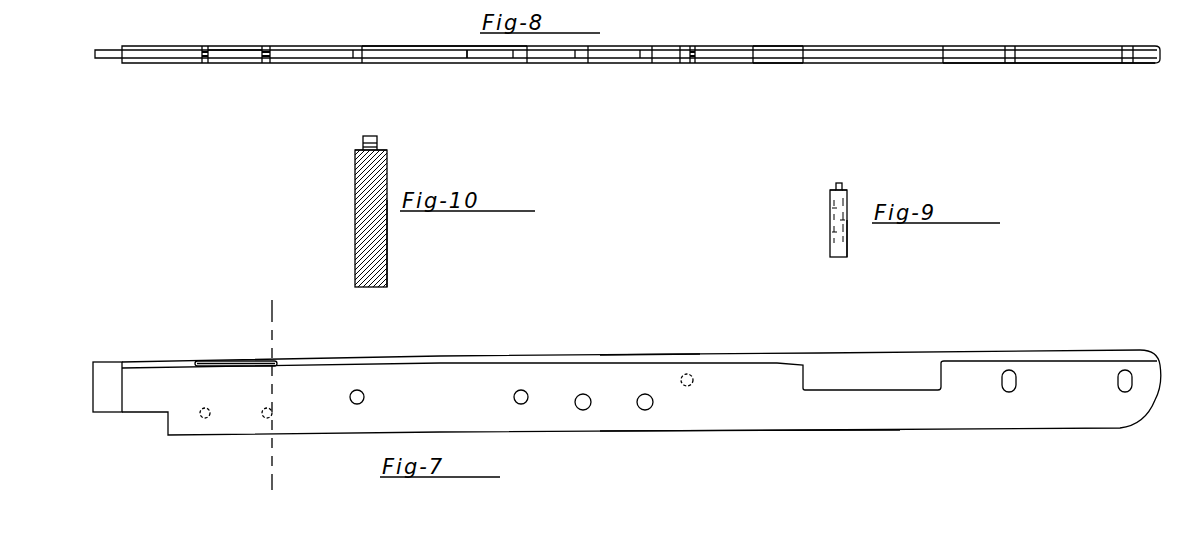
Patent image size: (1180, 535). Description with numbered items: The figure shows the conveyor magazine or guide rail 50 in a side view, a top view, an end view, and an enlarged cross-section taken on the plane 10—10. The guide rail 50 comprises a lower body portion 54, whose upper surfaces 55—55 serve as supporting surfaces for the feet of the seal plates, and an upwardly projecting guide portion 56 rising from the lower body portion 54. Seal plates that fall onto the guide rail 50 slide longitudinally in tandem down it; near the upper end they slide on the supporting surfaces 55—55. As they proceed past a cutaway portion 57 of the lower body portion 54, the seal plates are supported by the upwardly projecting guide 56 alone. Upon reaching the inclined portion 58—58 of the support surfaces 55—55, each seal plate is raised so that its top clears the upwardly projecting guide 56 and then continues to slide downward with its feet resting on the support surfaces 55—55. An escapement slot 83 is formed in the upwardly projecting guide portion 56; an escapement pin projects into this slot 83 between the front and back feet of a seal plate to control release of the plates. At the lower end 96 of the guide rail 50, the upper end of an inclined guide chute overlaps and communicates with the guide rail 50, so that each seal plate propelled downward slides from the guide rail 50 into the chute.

In FIG. 7, the section plane 10 is at (271, 308).
In FIG. 8, the guide rail 50 is at (384, 42).
In FIG. 10, the guide rail 50 is at (350, 226).
In FIG. 9, the guide rail 50 is at (828, 213).
In FIG. 7, the guide rail 50 is at (405, 353).
In FIG. 8, the lower body portion 54 is at (1068, 63).
In FIG. 10, the lower body portion 54 is at (386, 256).
In FIG. 9, the lower body portion 54 is at (847, 249).
In FIG. 7, the lower body portion 54 is at (720, 420).
In FIG. 8, the upper surfaces 55 is at (420, 46).
In FIG. 10, the upper surfaces 55 is at (358, 150).
In FIG. 9, the upper surfaces 55 is at (855, 178).
In FIG. 7, the upper surfaces 55 is at (521, 363).
In FIG. 8, the upwardly projecting guide portion 56 is at (466, 59).
In FIG. 10, the upwardly projecting guide portion 56 is at (368, 135).
In FIG. 9, the upwardly projecting guide portion 56 is at (838, 183).
In FIG. 7, the upwardly projecting guide portion 56 is at (647, 355).
In FIG. 7, the cutaway portion 57 is at (877, 378).
In FIG. 8, the inclined portion 58 is at (780, 46).
In FIG. 7, the inclined portion 58 is at (777, 364).
In FIG. 8, the escapement slot 83 is at (232, 49).
In FIG. 10, the escapement slot 83 is at (378, 148).
In FIG. 7, the escapement slot 83 is at (228, 360).
In FIG. 8, the lower end 96 is at (120, 60).
In FIG. 7, the lower end 96 is at (122, 410).